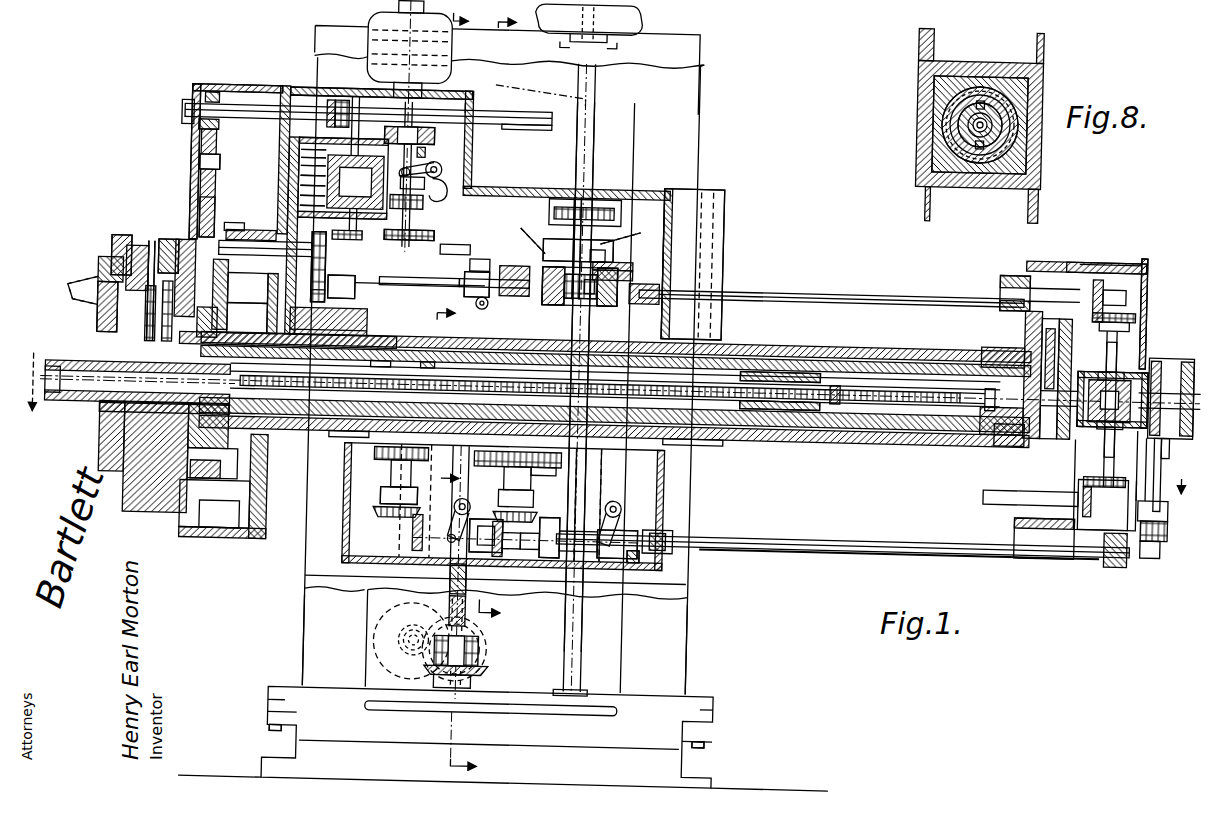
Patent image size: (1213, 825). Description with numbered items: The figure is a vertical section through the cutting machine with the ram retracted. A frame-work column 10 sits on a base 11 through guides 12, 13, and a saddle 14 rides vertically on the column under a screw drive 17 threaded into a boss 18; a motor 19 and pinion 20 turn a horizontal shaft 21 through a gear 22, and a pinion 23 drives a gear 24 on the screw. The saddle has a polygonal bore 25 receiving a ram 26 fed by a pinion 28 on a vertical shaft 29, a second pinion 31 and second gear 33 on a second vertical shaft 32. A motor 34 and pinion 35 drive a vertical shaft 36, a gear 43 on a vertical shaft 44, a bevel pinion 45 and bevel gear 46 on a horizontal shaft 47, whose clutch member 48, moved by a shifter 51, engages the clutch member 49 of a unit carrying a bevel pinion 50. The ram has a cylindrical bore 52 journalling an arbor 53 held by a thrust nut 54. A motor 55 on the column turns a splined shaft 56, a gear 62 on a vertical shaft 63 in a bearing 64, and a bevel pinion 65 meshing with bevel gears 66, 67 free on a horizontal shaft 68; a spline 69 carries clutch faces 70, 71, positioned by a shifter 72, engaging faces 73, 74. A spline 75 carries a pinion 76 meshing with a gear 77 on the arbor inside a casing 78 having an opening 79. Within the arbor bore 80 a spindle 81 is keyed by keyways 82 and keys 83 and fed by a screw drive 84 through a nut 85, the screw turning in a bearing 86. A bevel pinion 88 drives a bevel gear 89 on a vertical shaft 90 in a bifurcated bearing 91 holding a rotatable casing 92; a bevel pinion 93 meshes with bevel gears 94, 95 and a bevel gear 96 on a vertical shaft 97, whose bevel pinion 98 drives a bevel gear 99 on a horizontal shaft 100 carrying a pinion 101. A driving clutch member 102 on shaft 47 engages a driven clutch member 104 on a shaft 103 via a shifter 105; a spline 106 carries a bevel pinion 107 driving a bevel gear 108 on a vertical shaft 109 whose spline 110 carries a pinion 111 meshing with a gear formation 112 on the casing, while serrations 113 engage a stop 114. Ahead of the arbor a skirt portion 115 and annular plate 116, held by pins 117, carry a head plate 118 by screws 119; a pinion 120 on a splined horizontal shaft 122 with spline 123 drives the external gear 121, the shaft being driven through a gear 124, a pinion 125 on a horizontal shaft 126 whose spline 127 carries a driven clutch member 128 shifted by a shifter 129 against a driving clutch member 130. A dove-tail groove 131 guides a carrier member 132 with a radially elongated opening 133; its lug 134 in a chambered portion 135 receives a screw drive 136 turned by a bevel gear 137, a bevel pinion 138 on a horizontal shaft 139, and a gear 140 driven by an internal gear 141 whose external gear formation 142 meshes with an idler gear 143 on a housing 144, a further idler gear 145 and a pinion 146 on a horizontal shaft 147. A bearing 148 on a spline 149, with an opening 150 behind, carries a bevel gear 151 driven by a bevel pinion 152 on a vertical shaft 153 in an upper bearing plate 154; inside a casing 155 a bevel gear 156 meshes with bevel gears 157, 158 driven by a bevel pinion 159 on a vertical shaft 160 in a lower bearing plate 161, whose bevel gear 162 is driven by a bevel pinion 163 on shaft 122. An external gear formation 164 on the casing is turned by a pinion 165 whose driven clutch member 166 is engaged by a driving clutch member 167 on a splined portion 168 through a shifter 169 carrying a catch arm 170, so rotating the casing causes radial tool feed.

In FIG. 1, the column 10 is at (688, 655).
In FIG. 1, the base 11 is at (489, 748).
In FIG. 1, the guide 12 is at (270, 705).
In FIG. 1, the guide 13 is at (270, 722).
In FIG. 1, the saddle 14 is at (672, 228).
In FIG. 8, the saddle 14 is at (1040, 80).
In FIG. 1, the screw drive 17 is at (430, 614).
In FIG. 1, the boss 18 is at (473, 468).
In FIG. 1, the motor 19 is at (372, 648).
In FIG. 1, the pinion 20 is at (410, 660).
In FIG. 1, the horizontal shaft 21 is at (481, 641).
In FIG. 1, the gear 22 is at (508, 651).
In FIG. 1, the pinion 23 is at (478, 655).
In FIG. 1, the gear 24 is at (487, 671).
In FIG. 1, the bore 25 is at (699, 449).
In FIG. 8, the bore 25 is at (930, 95).
In FIG. 1, the ram 26 is at (765, 442).
In FIG. 8, the ram 26 is at (940, 116).
In FIG. 1, the pinion 28 is at (598, 482).
In FIG. 1, the vertical shaft 29 is at (575, 470).
In FIG. 1, the second pinion 31 is at (541, 470).
In FIG. 1, the second vertical shaft 32 is at (503, 482).
In FIG. 1, the second gear 33 is at (505, 540).
In FIG. 1, the motor 34 is at (378, 22).
In FIG. 1, the pinion 35 is at (433, 137).
In FIG. 1, the vertical shaft 36 is at (425, 229).
In FIG. 1, the gear 43 is at (380, 465).
In FIG. 1, the vertical shaft 44 is at (390, 480).
In FIG. 1, the bevel pinion 45 is at (380, 505).
In FIG. 1, the bevel gear 46 is at (413, 535).
In FIG. 1, the horizontal shaft 47 is at (560, 560).
In FIG. 1, the clutch member 48 is at (478, 546).
In FIG. 1, the clutch member 49 is at (508, 560).
In FIG. 1, the bevel pinion 50 is at (525, 560).
In FIG. 1, the shifter 51 is at (454, 510).
In FIG. 1, the cylindrical bore 52 is at (872, 358).
In FIG. 8, the cylindrical bore 52 is at (990, 95).
In FIG. 1, the arbor 53 is at (912, 363).
In FIG. 8, the arbor 53 is at (1005, 110).
In FIG. 1, the thrust nut 54 is at (1000, 440).
In FIG. 1, the motor 55 is at (640, 24).
In FIG. 1, the shaft 56 is at (592, 133).
In FIG. 1, the gear 62 is at (618, 212).
In FIG. 1, the vertical shaft 63 is at (612, 232).
In FIG. 1, the bearing 64 is at (600, 244).
In FIG. 1, the bevel pinion 65 is at (626, 260).
In FIG. 1, the bevel gear 66 is at (632, 272).
In FIG. 1, the bevel gear 67 is at (538, 250).
In FIG. 1, the horizontal shaft 68 is at (741, 288).
In FIG. 1, the spline 69 is at (560, 262).
In FIG. 1, the clutch face 70 is at (590, 305).
In FIG. 1, the clutch face 71 is at (566, 305).
In FIG. 1, the shifter 72 is at (604, 265).
In FIG. 1, the clutch face 73 is at (612, 305).
In FIG. 1, the clutch face 74 is at (546, 308).
In FIG. 1, the spline 75 is at (785, 291).
In FIG. 1, the pinion 76 is at (1040, 270).
In FIG. 1, the gear 77 is at (1040, 333).
In FIG. 1, the casing 78 is at (1057, 268).
In FIG. 1, the opening 79 is at (1137, 293).
In FIG. 1, the cylindrical bore 80 is at (853, 361).
In FIG. 8, the cylindrical bore 80 is at (972, 126).
In FIG. 1, the spindle 81 is at (761, 346).
In FIG. 8, the spindle 81 is at (990, 128).
In FIG. 1, the keyways 82 is at (50, 361).
In FIG. 1, the keys 83 is at (431, 333).
In FIG. 8, the keys 83 is at (980, 103).
In FIG. 1, the screw drive 84 is at (885, 406).
In FIG. 8, the screw drive 84 is at (1000, 136).
In FIG. 1, the nut 85 is at (829, 351).
In FIG. 1, the bearing 86 is at (995, 405).
In FIG. 1, the bevel pinion 88 is at (1091, 276).
In FIG. 1, the bevel gear 89 is at (1131, 310).
In FIG. 1, the vertical shaft 90 is at (1127, 328).
In FIG. 1, the bifurcated bearing 91 is at (1105, 346).
In FIG. 1, the casing 92 is at (1146, 441).
In FIG. 1, the bevel pinion 93 is at (1109, 401).
In FIG. 1, the bevel gear 94 is at (1140, 372).
In FIG. 1, the bevel gear 95 is at (1097, 380).
In FIG. 1, the bevel gear 96 is at (1097, 424).
In FIG. 1, the vertical shaft 97 is at (1105, 366).
In FIG. 1, the bevel pinion 98 is at (1106, 486).
In FIG. 1, the bevel gear 99 is at (1101, 506).
In FIG. 1, the horizontal shaft 100 is at (1011, 497).
In FIG. 1, the pinion 101 is at (1036, 531).
In FIG. 1, the driving clutch member 102 is at (548, 517).
In FIG. 1, the shaft 103 is at (748, 546).
In FIG. 1, the driven clutch member 104 is at (605, 560).
In FIG. 1, the shifter 105 is at (611, 500).
In FIG. 1, the spline 106 is at (881, 548).
In FIG. 1, the bevel pinion 107 is at (1131, 576).
In FIG. 1, the bevel gear 108 is at (1160, 556).
In FIG. 1, the vertical shaft 109 is at (1163, 476).
In FIG. 1, the spline 110 is at (1186, 357).
In FIG. 1, the pinion 111 is at (1175, 449).
In FIG. 1, the gear formation 112 is at (1155, 372).
In FIG. 1, the serrations 113 is at (634, 562).
In FIG. 1, the stop 114 is at (673, 555).
In FIG. 1, the skirt portion 115 is at (351, 331).
In FIG. 1, the annular plate 116 is at (229, 470).
In FIG. 1, the pins 117 is at (381, 331).
In FIG. 1, the head plate 118 is at (150, 511).
In FIG. 1, the screws 119 is at (130, 438).
In FIG. 1, the pinion 120 is at (237, 226).
In FIG. 1, the external gear 121 is at (225, 536).
In FIG. 1, the horizontal shaft 122 is at (455, 250).
In FIG. 1, the spline 123 is at (481, 252).
In FIG. 1, the gear 124 is at (265, 233).
In FIG. 1, the pinion 125 is at (326, 331).
In FIG. 1, the horizontal shaft 126 is at (406, 285).
In FIG. 1, the spline 127 is at (448, 285).
In FIG. 1, the driven clutch member 128 is at (485, 264).
In FIG. 1, the shifter 129 is at (476, 326).
In FIG. 1, the driving clutch member 130 is at (518, 266).
In FIG. 1, the dove-tail groove 131 is at (120, 240).
In FIG. 1, the carrier member 132 is at (100, 283).
In FIG. 1, the radially elongated opening 133 is at (115, 342).
In FIG. 1, the lug 134 is at (141, 319).
In FIG. 1, the chambered portion 135 is at (110, 276).
In FIG. 1, the screw drive 136 is at (150, 242).
In FIG. 1, the bevel gear 137 is at (172, 243).
In FIG. 1, the bevel pinion 138 is at (167, 317).
In FIG. 1, the horizontal shaft 139 is at (236, 300).
In FIG. 1, the gear 140 is at (236, 316).
In FIG. 1, the internal gear 141 is at (165, 536).
In FIG. 1, the external gear formation 142 is at (195, 536).
In FIG. 1, the idler gear 143 is at (192, 216).
In FIG. 1, the housing 144 is at (236, 87).
In FIG. 1, the idler gear 145 is at (190, 140).
In FIG. 1, the pinion 146 is at (205, 88).
In FIG. 1, the horizontal shaft 147 is at (255, 108).
In FIG. 1, the bearing 148 is at (312, 92).
In FIG. 1, the spline 149 is at (522, 124).
In FIG. 1, the opening 150 is at (473, 104).
In FIG. 1, the bevel gear 151 is at (337, 102).
In FIG. 1, the bevel pinion 152 is at (372, 112).
In FIG. 1, the vertical shaft 153 is at (368, 163).
In FIG. 1, the upper bearing plate 154 is at (300, 150).
In FIG. 1, the casing 155 is at (300, 158).
In FIG. 1, the bevel gear 156 is at (300, 166).
In FIG. 1, the bevel gear 157 is at (300, 176).
In FIG. 1, the bevel gear 158 is at (300, 186).
In FIG. 1, the bevel pinion 159 is at (363, 236).
In FIG. 1, the vertical shaft 160 is at (357, 282).
In FIG. 1, the lower bearing plate 161 is at (300, 206).
In FIG. 1, the bevel gear 162 is at (328, 266).
In FIG. 1, the bevel pinion 163 is at (327, 296).
In FIG. 1, the external gear formation 164 is at (300, 196).
In FIG. 1, the pinion 165 is at (423, 205).
In FIG. 1, the driven clutch member 166 is at (430, 182).
In FIG. 1, the driving clutch member 167 is at (440, 174).
In FIG. 1, the splined portion 168 is at (424, 152).
In FIG. 1, the shifter 169 is at (441, 165).
In FIG. 1, the catch arm 170 is at (447, 192).